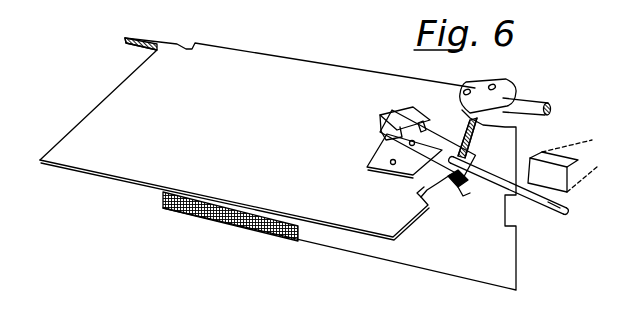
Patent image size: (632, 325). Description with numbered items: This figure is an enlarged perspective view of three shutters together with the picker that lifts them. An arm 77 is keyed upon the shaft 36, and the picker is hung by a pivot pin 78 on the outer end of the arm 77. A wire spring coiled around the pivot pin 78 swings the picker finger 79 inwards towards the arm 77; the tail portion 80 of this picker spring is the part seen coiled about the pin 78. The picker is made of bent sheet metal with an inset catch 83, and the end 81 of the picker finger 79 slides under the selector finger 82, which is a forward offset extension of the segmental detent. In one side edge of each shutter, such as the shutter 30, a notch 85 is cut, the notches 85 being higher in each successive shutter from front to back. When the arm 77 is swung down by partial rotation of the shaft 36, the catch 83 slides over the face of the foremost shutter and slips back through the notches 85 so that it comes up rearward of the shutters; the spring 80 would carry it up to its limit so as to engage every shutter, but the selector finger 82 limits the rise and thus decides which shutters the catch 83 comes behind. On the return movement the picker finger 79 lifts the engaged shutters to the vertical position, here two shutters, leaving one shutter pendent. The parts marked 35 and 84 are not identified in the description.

The shutter 30 is at (219, 225).
The rod 35 is at (496, 152).
The shaft 36 is at (536, 103).
The arm 77 is at (500, 92).
The pivot pin 78 is at (421, 122).
The picker finger 79 is at (428, 143).
The tail portion of the picker spring 80 is at (396, 118).
The end of the picker finger 81 is at (548, 207).
The selector finger 82 is at (541, 160).
The catch 83 is at (444, 184).
The plate 84 is at (278, 164).
The notch 85 is at (416, 193).